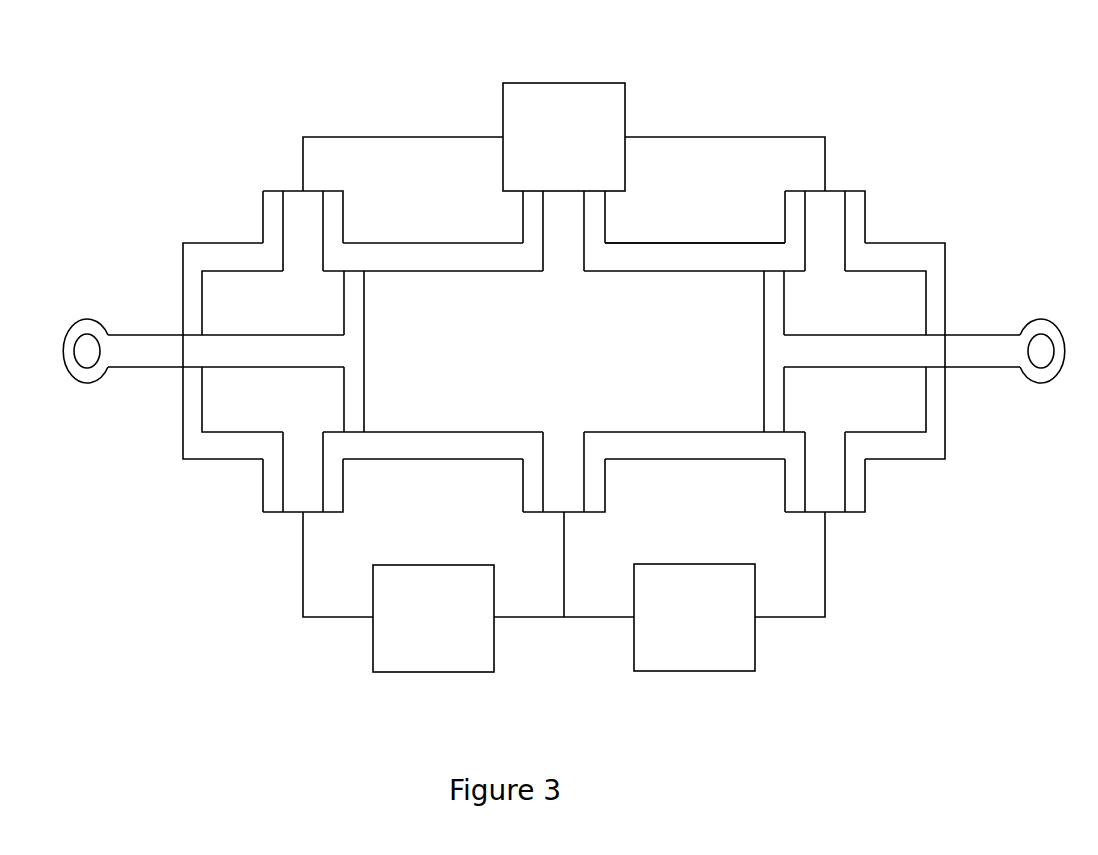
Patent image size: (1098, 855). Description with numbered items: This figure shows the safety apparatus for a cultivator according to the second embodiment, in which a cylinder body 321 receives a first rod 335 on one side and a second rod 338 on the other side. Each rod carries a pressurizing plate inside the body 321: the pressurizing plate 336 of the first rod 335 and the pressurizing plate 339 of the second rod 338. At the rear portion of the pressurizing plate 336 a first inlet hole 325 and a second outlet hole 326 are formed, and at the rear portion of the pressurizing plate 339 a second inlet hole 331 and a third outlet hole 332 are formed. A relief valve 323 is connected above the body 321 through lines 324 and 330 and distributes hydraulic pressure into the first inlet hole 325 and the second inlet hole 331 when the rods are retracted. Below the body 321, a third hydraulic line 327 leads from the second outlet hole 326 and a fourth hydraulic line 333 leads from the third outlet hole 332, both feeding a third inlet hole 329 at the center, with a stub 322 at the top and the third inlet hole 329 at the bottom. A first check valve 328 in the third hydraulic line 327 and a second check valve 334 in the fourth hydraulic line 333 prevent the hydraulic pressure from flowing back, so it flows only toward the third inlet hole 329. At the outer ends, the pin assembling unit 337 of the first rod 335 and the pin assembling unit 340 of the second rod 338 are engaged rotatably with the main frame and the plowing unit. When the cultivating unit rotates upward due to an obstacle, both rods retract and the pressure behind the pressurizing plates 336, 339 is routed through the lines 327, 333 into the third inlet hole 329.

The body 321 is at (687, 240).
The upper center stub 322 is at (565, 222).
The relief valve 323 is at (566, 78).
The upper left connection line 324 is at (405, 132).
The first inlet hole 325 is at (303, 222).
The second outlet hole 326 is at (303, 497).
The third hydraulic line 327 is at (337, 620).
The first check valve 328 is at (434, 675).
The third inlet hole 329 is at (565, 497).
The upper right connection line 330 is at (727, 132).
The second inlet hole 331 is at (825, 222).
The third outlet hole 332 is at (825, 497).
The fourth hydraulic line 333 is at (790, 620).
The second check valve 334 is at (697, 675).
The first rod 335 is at (142, 330).
The pressurizing plate 336 is at (356, 405).
The pin assembling unit 337 is at (87, 348).
The second rod 338 is at (986, 330).
The pressurizing plate 339 is at (772, 403).
The pin assembling unit 340 is at (1043, 318).